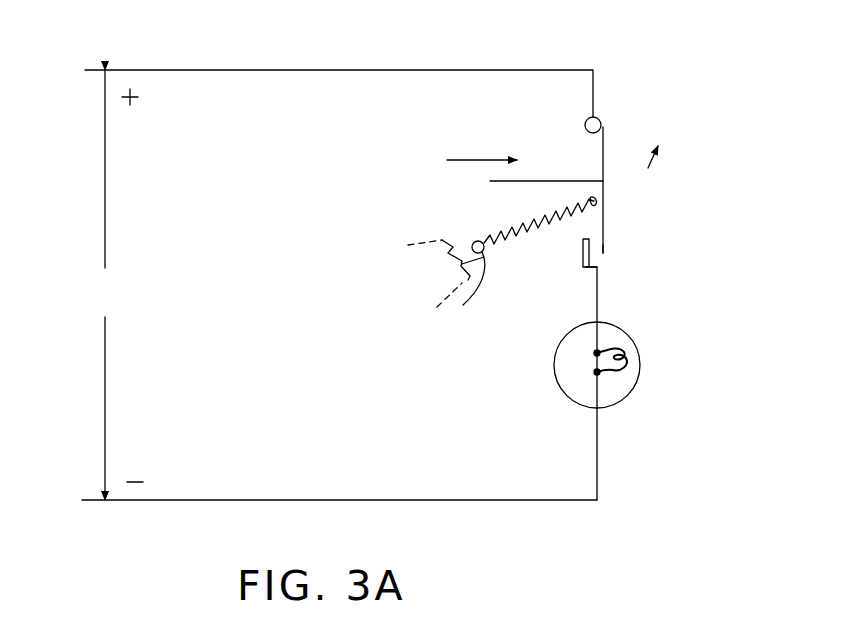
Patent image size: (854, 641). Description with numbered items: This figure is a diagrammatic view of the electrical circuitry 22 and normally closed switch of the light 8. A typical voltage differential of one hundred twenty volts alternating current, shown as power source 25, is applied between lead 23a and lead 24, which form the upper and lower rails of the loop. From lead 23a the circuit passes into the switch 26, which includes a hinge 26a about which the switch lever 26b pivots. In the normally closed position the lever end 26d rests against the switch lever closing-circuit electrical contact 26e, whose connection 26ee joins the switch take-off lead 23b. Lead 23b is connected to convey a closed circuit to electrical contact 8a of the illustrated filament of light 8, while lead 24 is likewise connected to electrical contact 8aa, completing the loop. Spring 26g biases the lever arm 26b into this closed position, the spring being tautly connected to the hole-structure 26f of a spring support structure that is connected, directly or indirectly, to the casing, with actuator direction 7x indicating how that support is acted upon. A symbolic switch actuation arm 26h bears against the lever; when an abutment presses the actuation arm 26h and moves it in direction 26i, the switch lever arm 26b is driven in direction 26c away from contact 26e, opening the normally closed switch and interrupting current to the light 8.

The lamp circuit 22 is at (152, 50).
The lead 23a is at (593, 95).
The switch take-off lead 23b is at (597, 298).
The lead 24 is at (520, 500).
The 120 VAC power source 25 is at (130, 277).
The hinge 26 is at (560, 218).
The switch pivot 26a is at (600, 120).
The switch lever 26b is at (604, 223).
The direction of lever arm movement 26c is at (617, 192).
The arm contact end 26d is at (592, 253).
The switch lever closing-circuit electrical contact 26e is at (582, 248).
The contact connection 26ee is at (592, 268).
The hole-structure of spring support structure 26f is at (446, 291).
The spring 26g is at (508, 227).
The switch actuation arm 26h is at (503, 188).
The direction of actuation arm movement 26i is at (467, 157).
The actuator direction 7x is at (480, 238).
The light 8 is at (592, 373).
The electrical contact of filament 8a is at (597, 353).
The electrical contact of filament 8aa is at (597, 372).